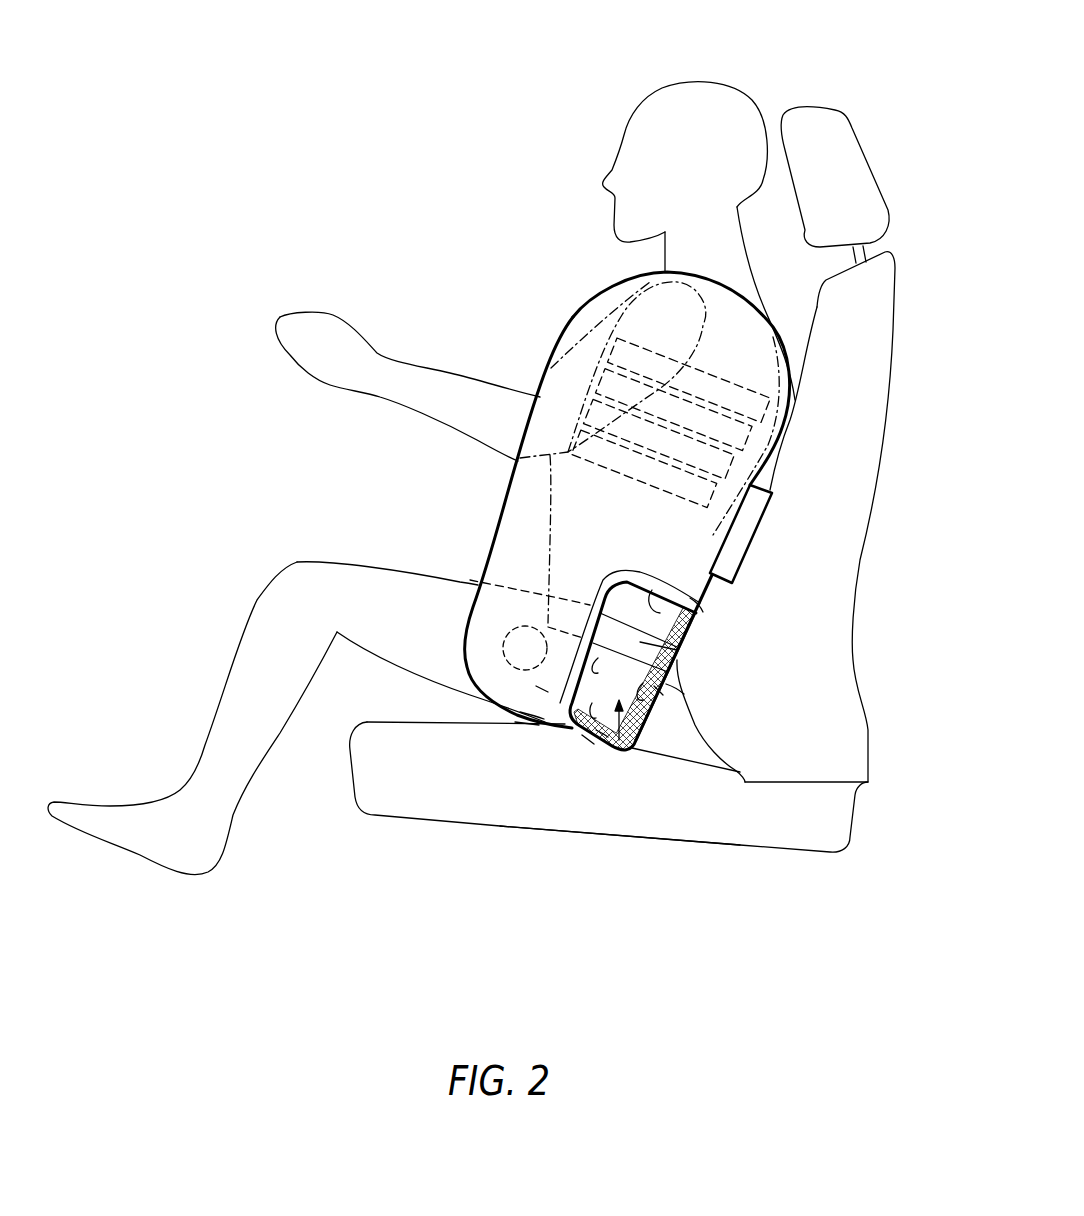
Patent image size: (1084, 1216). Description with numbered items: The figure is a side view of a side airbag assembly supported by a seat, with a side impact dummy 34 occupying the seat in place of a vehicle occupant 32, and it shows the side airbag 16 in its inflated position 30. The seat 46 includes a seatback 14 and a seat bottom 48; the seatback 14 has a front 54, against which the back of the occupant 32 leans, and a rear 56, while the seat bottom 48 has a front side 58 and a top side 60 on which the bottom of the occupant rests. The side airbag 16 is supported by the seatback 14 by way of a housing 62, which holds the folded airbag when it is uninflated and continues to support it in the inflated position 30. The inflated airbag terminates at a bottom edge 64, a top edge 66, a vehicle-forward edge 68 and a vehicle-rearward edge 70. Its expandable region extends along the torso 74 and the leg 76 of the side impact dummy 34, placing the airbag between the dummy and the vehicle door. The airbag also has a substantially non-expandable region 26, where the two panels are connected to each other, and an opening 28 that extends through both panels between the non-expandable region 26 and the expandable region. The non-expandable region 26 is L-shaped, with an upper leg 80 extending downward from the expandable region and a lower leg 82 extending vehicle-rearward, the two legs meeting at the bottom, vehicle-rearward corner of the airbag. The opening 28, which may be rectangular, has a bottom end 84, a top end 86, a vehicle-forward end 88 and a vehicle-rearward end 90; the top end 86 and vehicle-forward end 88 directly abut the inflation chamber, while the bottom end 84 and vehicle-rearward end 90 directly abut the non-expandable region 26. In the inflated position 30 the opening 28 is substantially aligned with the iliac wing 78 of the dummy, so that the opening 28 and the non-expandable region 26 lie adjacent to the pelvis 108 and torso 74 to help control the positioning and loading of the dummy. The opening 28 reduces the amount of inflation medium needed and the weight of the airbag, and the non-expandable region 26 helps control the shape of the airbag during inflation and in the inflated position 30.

The seatback 14 is at (619, 495).
The side airbag 16 is at (573, 320).
The non-expandable region 26 is at (638, 742).
The opening 28 is at (625, 755).
The inflated position 30 is at (450, 537).
The vehicle occupant 32 is at (685, 121).
The side impact dummy 34 is at (687, 80).
The seat 46 is at (834, 888).
The seat bottom 48 is at (527, 725).
The front 54 is at (805, 323).
The rear 56 is at (897, 320).
The front side 58 is at (352, 760).
The top side 60 is at (384, 720).
The housing 62 is at (757, 533).
The bottom edge 64 is at (530, 715).
The top edge 66 is at (708, 272).
The vehicle-forward edge 68 is at (551, 368).
The vehicle-rearward edge 70 is at (769, 482).
The torso 74 is at (610, 532).
The leg 76 is at (247, 628).
The iliac wing 78 is at (679, 655).
The upper leg 80 is at (666, 685).
The lower leg 82 is at (597, 740).
The bottom end 84 is at (607, 742).
The top end 86 is at (703, 620).
The vehicle-forward end 88 is at (585, 656).
The vehicle-rearward end 90 is at (540, 690).
The pelvis 108 is at (619, 744).